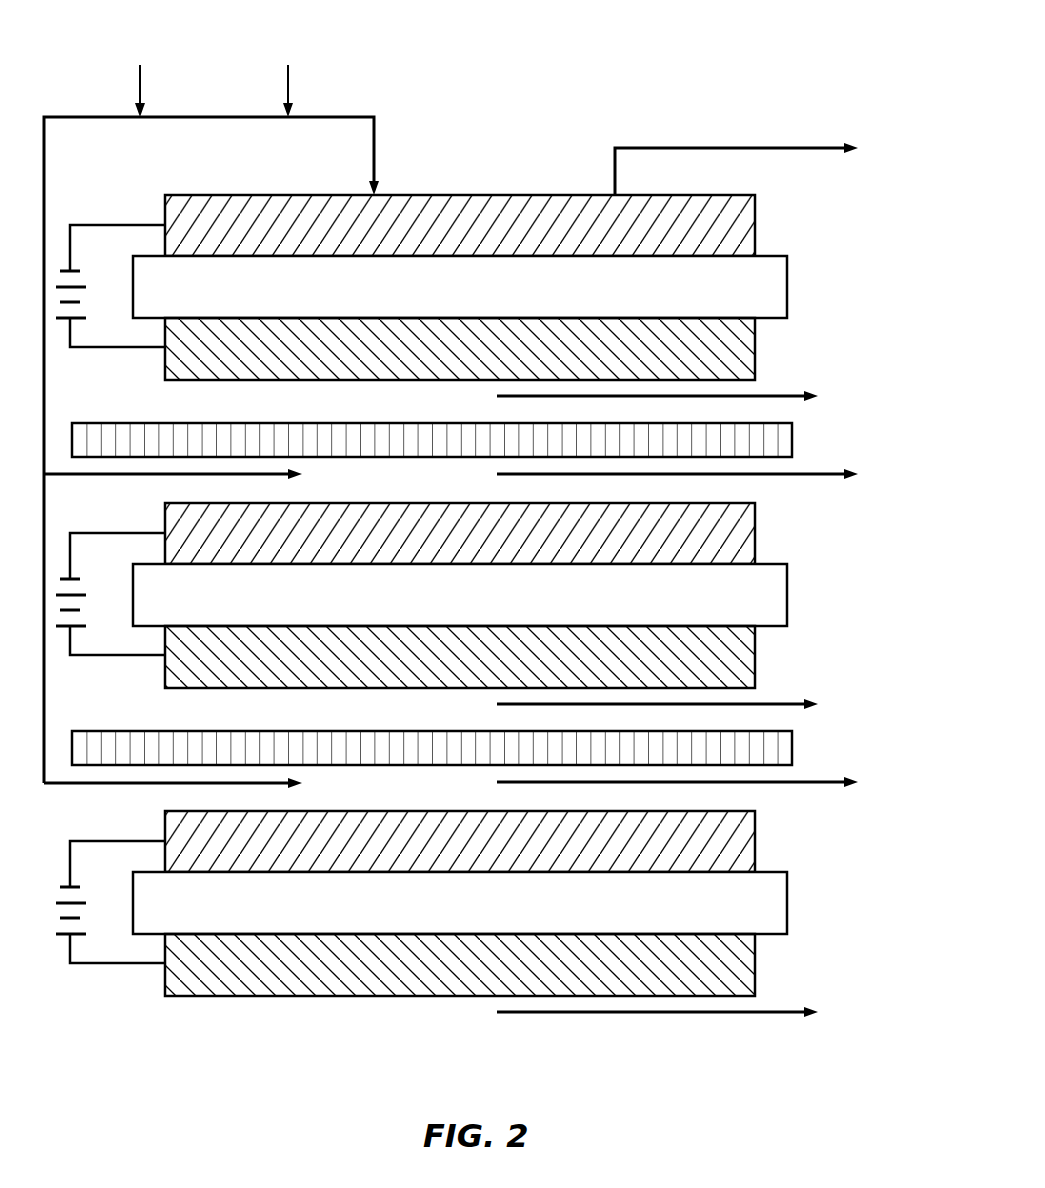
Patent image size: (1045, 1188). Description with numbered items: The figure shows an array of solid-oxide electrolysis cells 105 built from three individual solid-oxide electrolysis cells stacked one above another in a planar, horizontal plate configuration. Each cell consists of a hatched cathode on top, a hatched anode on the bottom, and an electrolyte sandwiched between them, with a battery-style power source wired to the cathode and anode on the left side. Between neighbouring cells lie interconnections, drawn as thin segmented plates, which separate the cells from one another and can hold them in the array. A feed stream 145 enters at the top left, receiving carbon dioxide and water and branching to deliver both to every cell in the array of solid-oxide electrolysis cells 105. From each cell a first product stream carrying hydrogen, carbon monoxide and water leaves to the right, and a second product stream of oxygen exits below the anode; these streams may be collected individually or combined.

The array of solid-oxide electrolysis cells 105 is at (514, 104).
The feed stream 145 is at (211, 413).